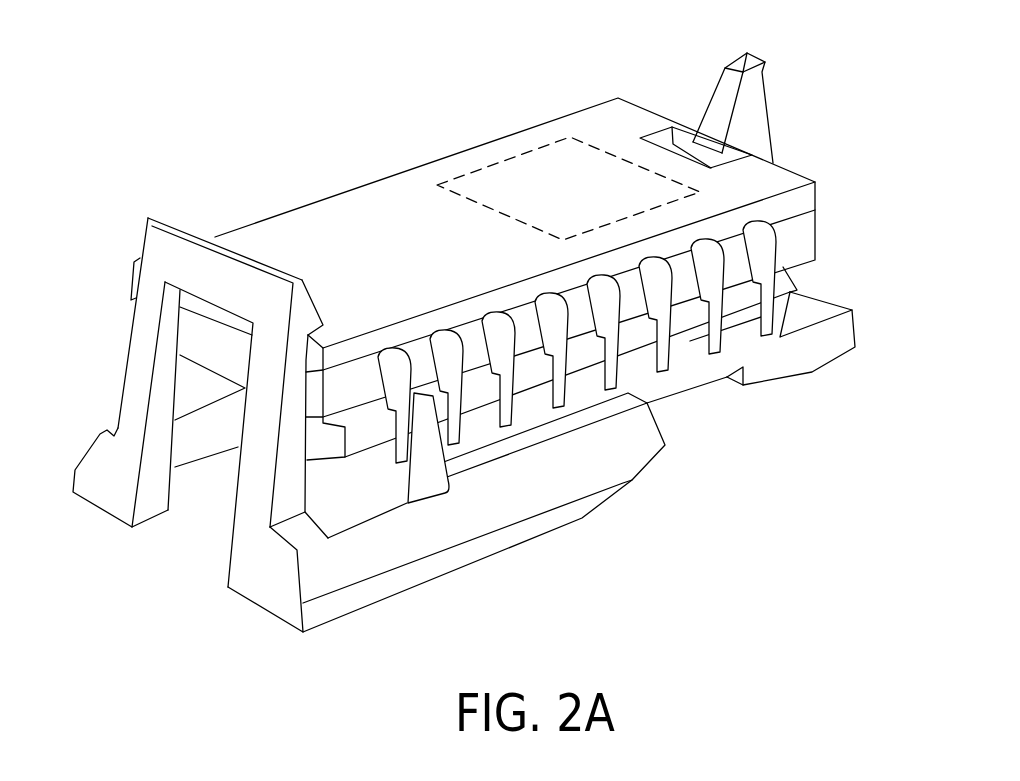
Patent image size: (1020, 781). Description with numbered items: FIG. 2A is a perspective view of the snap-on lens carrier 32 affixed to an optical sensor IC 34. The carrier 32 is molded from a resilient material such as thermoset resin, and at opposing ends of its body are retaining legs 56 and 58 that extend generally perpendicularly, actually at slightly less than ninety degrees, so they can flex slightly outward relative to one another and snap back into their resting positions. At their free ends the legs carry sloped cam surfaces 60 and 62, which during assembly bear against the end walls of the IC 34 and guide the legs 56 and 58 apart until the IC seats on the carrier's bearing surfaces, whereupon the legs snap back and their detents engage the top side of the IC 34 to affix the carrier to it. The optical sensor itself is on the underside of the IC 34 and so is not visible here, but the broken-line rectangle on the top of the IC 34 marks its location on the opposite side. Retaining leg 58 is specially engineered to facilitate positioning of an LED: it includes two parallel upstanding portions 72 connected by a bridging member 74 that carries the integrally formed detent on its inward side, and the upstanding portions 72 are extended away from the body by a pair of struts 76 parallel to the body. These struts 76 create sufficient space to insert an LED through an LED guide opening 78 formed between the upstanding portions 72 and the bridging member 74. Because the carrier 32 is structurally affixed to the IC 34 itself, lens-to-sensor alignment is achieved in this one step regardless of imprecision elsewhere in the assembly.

The lens carrier 32 is at (688, 480).
The optical sensor IC 34 is at (523, 128).
The retaining leg 56 is at (768, 107).
The retaining leg 58 is at (125, 353).
The sloped cam surface 60 is at (725, 102).
The sloped cam surface 62 is at (312, 294).
The upstanding portion 72 is at (137, 388).
The bridging member 74 is at (195, 267).
The strut 76 is at (357, 558).
The LED guide opening 78 is at (187, 530).